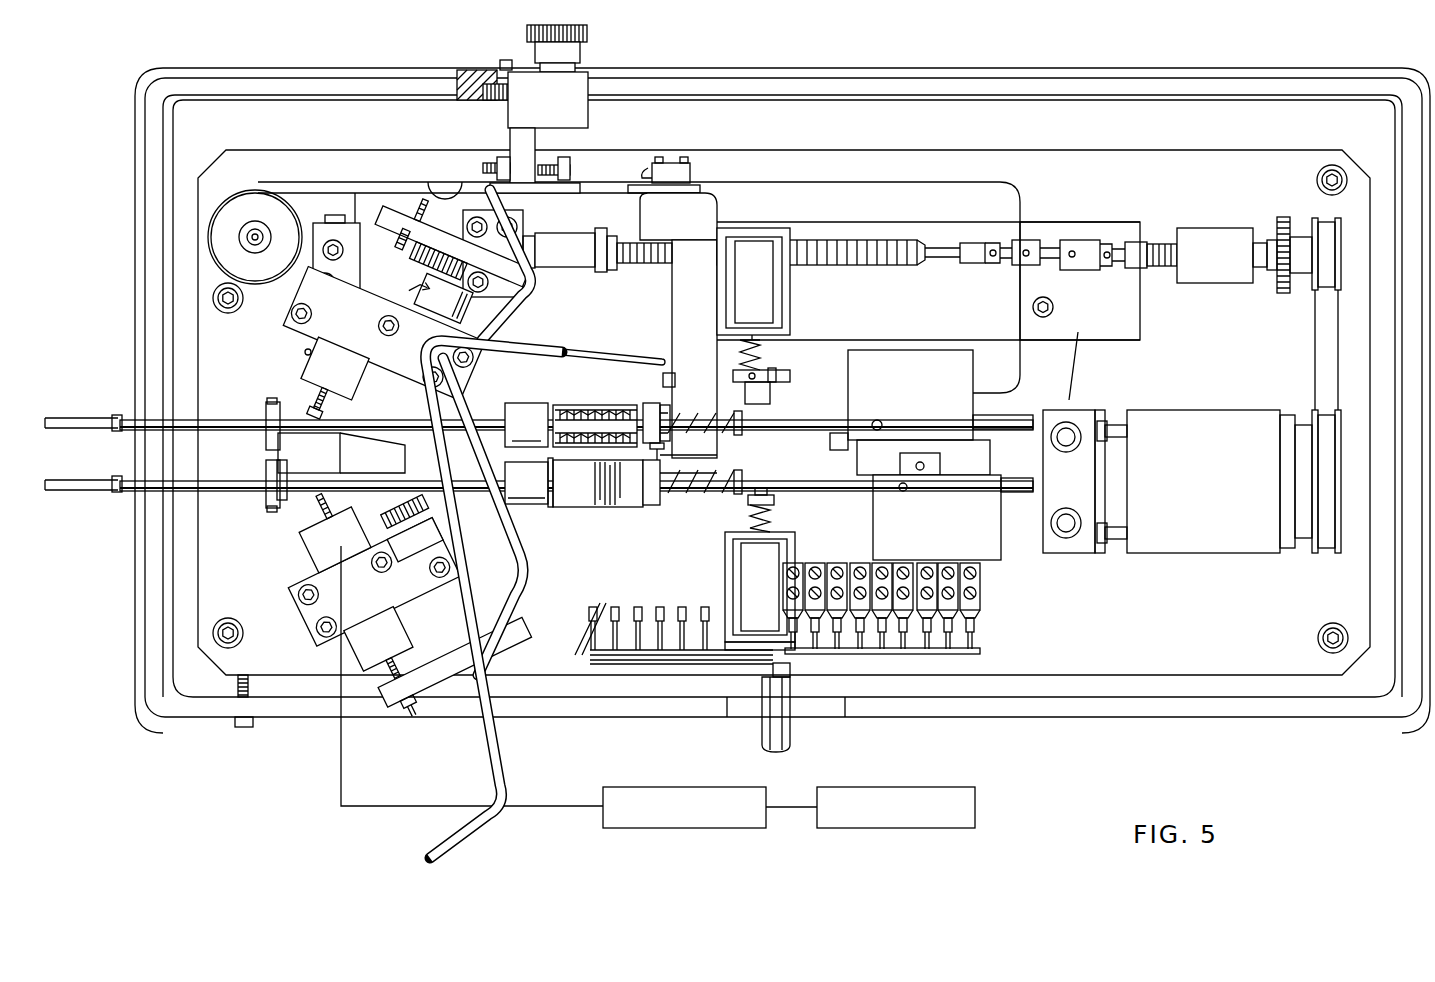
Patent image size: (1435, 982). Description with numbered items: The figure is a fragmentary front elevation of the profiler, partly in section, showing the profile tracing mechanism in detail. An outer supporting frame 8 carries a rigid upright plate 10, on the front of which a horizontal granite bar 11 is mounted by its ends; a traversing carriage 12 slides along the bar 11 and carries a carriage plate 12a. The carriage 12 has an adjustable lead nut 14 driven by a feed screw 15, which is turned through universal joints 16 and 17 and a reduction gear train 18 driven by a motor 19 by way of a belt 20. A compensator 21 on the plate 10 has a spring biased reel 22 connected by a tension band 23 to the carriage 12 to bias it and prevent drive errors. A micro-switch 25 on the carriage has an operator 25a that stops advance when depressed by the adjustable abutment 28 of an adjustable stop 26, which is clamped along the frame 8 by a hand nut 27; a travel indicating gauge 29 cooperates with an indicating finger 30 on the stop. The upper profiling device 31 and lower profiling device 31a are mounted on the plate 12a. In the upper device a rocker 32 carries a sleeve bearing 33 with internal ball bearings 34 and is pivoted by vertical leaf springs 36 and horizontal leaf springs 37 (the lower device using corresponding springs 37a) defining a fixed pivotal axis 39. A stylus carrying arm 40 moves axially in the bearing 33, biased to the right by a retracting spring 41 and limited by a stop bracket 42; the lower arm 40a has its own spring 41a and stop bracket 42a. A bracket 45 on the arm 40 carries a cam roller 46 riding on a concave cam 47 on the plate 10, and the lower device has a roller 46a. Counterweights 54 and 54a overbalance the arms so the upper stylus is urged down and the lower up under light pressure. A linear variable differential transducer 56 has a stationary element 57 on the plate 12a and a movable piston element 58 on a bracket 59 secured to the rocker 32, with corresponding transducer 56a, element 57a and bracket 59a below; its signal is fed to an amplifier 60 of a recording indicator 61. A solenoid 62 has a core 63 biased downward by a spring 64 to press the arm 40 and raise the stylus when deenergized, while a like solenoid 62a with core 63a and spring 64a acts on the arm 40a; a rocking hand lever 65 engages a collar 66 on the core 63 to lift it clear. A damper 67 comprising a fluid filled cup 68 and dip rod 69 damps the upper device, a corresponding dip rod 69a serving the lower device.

The outer supporting frame 8 is at (318, 66).
The upright support plate 10 is at (198, 537).
The horizontal granite bar 11 is at (882, 238).
The traversing carriage 12 is at (705, 212).
The carriage plate 12a is at (300, 342).
The lead nut 14 is at (555, 248).
The feed screw 15 is at (665, 242).
The universal joint 16 is at (985, 248).
The universal joint 17 is at (1085, 248).
The reduction gear train 18 is at (1278, 225).
The motor 19 is at (1185, 545).
The belt 20 is at (1328, 385).
The compensator 21 is at (235, 220).
The spring biased reel 22 is at (243, 240).
The tension band 23 is at (280, 193).
The micro-switch 25 is at (682, 160).
The operator 25a is at (647, 175).
The adjustable stop 26 is at (522, 126).
The hand nut 27 is at (588, 50).
The adjustable abutment 28 is at (557, 165).
The travel indicating gauge 29 is at (497, 72).
The indicating finger 30 is at (513, 68).
The upper profiling device 31 is at (292, 357).
The lower profiling device 31a is at (294, 551).
The rocker 32 is at (614, 392).
The sleeve bearing 33 is at (565, 402).
The internal ball bearings 34 is at (636, 410).
The vertical single leaf springs 36 is at (660, 440).
The horizontal single leaf springs 37 is at (663, 413).
The horizontal single leaf springs 37a is at (660, 455).
The pivotal axis 39 is at (636, 456).
The stylus carrying arm 40 is at (125, 420).
The lower stylus carrying arm 40a is at (125, 482).
The retracting spring 41 is at (715, 392).
The retracting spring 41a is at (690, 490).
The stop bracket 42 is at (526, 425).
The stop bracket 42a is at (532, 483).
The bracket 45 is at (268, 412).
The cam roller 46 is at (265, 440).
The cam roller 46a is at (256, 485).
The cam 47 is at (268, 470).
The adjustable counterweight 54 is at (931, 412).
The counterweight 54a is at (953, 517).
The linear variable differential transducer 56 is at (325, 366).
The linear variable differential transducer 56a is at (322, 552).
The stationary element 57 is at (380, 262).
The stationary element 57a is at (372, 638).
The movable piston element 58 is at (360, 222).
The bracket 59 is at (533, 280).
The bracket 59a is at (535, 605).
The amplifier 60 is at (715, 828).
The recording indicator 61 is at (955, 828).
The solenoid 62 is at (768, 300).
The solenoid 62a is at (782, 563).
The core 63 is at (770, 350).
The core 63a is at (777, 521).
The spring 64 is at (770, 372).
The spring 64a is at (777, 498).
The rocking hand lever 65 is at (498, 790).
The collar 66 is at (773, 385).
The damper 67 is at (395, 288).
The fluid filled cup 68 is at (425, 295).
The dip rod 69 is at (431, 239).
The dip rod 69a is at (395, 515).